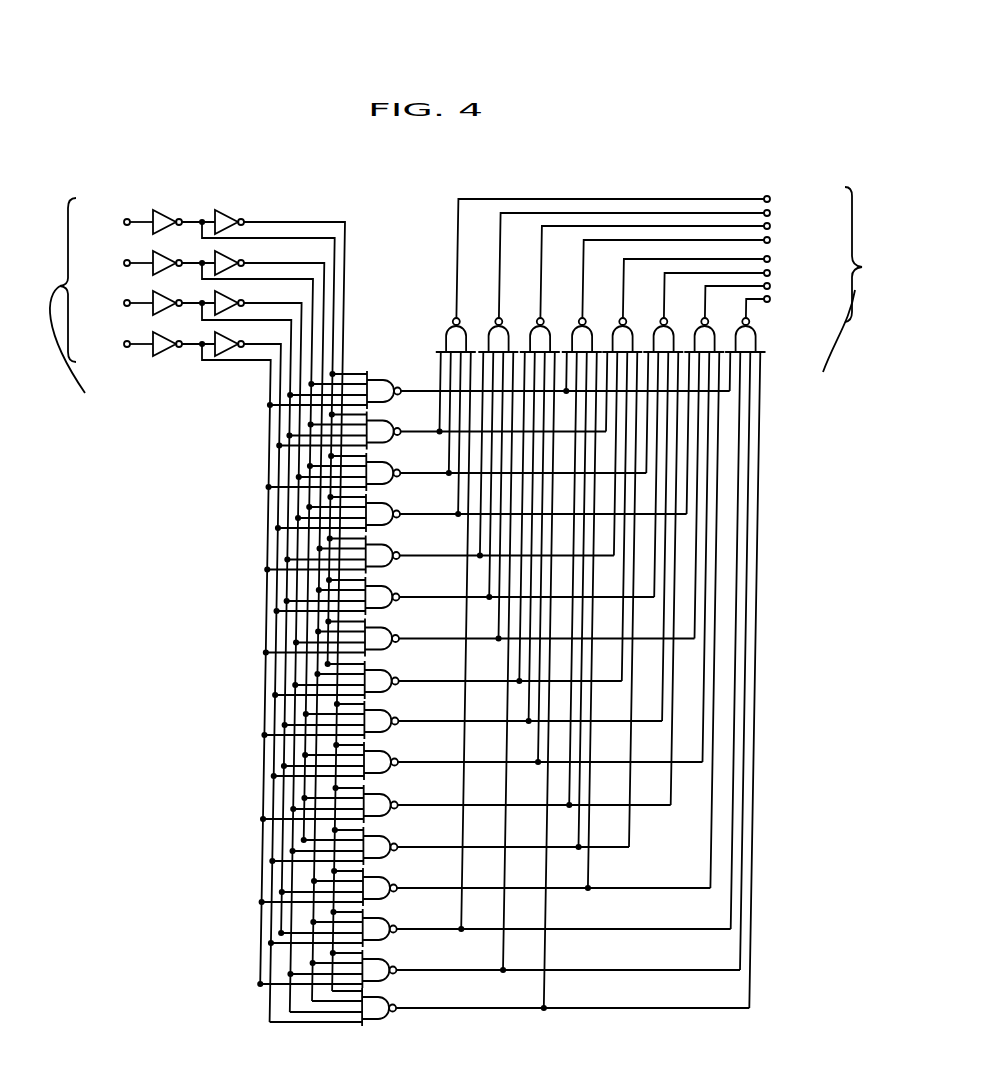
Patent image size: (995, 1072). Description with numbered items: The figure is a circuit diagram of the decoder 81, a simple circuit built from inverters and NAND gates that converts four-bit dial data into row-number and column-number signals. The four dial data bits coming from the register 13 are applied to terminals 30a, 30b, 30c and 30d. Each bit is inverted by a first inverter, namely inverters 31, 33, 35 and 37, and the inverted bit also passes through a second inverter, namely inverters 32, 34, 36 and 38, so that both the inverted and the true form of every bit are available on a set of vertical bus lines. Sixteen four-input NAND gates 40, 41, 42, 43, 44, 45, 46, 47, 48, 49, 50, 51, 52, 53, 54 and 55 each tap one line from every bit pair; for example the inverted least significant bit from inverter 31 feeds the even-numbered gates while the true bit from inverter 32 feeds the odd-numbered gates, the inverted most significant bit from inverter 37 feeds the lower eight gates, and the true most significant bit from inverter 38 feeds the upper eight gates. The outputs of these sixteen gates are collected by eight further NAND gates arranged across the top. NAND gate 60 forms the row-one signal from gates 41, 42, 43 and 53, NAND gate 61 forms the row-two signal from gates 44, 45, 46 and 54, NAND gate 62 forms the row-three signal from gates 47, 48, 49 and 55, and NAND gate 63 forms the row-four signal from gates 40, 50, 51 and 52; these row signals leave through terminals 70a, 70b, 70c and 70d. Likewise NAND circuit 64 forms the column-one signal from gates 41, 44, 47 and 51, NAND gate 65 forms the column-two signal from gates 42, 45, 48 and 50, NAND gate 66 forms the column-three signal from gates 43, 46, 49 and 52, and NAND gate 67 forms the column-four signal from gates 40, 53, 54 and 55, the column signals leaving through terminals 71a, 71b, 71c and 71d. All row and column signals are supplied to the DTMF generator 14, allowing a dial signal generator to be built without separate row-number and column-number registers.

The register 13 is at (157, 306).
The DTMF generator 14 is at (814, 321).
The terminal 30a is at (120, 340).
The terminal 30b is at (120, 298).
The terminal 30c is at (120, 259).
The terminal 30d is at (120, 219).
The inverter 31 is at (168, 354).
The inverter 32 is at (243, 340).
The inverter 33 is at (168, 313).
The inverter 34 is at (243, 299).
The inverter 35 is at (168, 273).
The inverter 36 is at (243, 259).
The inverter 37 is at (168, 232).
The inverter 38 is at (243, 218).
The NAND gate 40 is at (397, 385).
The NAND gate 41 is at (397, 426).
The NAND gate 42 is at (396, 467).
The NAND gate 43 is at (396, 508).
The NAND gate 44 is at (396, 550).
The NAND gate 45 is at (395, 591).
The NAND gate 46 is at (395, 632).
The NAND gate 47 is at (395, 675).
The NAND gate 48 is at (394, 715).
The NAND gate 49 is at (394, 756).
The NAND gate 50 is at (394, 799).
The NAND gate 51 is at (393, 841).
The NAND gate 52 is at (393, 882).
The NAND gate 53 is at (393, 923).
The NAND gate 54 is at (392, 964).
The NAND gate 55 is at (392, 1002).
The NAND gate 60 is at (460, 324).
The NAND gate 61 is at (503, 324).
The NAND gate 62 is at (544, 324).
The NAND gate 63 is at (586, 324).
The NAND circuit 64 is at (627, 324).
The NAND gate 65 is at (668, 324).
The NAND gate 66 is at (712, 332).
The NAND gate 67 is at (756, 342).
The terminal 70a is at (770, 198).
The terminal 70b is at (770, 212).
The terminal 70c is at (770, 225).
The terminal 70d is at (770, 240).
The terminal 71a is at (770, 259).
The terminal 71b is at (770, 273).
The terminal 71c is at (770, 286).
The terminal 71d is at (770, 299).
The decoder 81 is at (490, 188).